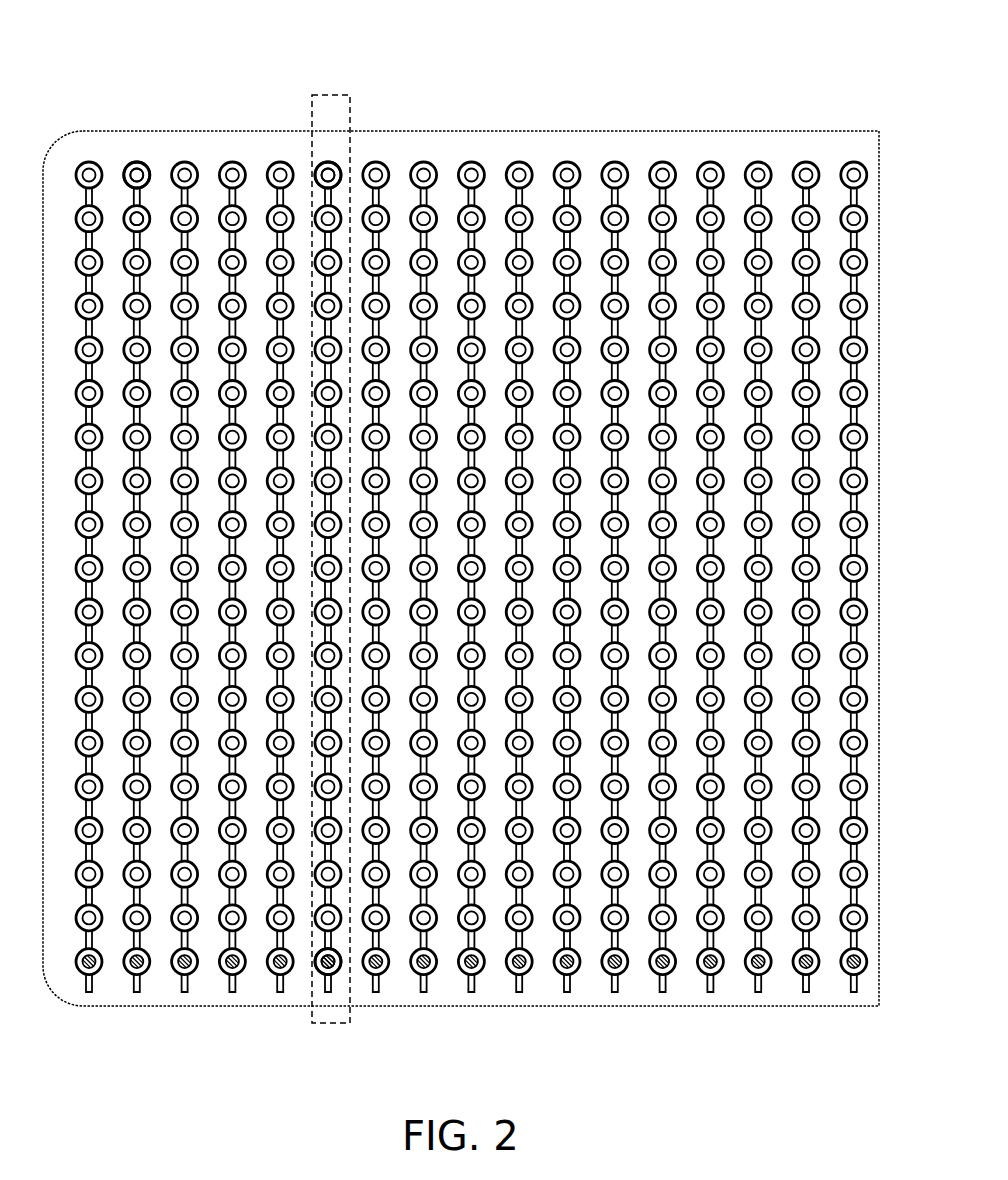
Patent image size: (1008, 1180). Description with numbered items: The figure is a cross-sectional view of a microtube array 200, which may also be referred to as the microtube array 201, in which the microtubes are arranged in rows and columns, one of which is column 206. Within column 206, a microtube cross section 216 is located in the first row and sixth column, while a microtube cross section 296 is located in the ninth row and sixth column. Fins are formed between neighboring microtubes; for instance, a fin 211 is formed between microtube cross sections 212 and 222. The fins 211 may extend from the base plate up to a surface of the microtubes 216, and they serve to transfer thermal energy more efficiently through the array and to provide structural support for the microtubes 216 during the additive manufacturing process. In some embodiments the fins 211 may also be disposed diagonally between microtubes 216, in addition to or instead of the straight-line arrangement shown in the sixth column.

The microtube array 200 is at (163, 62).
The microtube array 201 is at (607, 135).
The column 206 is at (350, 95).
The fin 211 is at (136, 200).
The microtube cross section 212 is at (141, 164).
The microtube cross section 216 is at (333, 163).
The microtube cross section 222 is at (147, 208).
The microtube cross section 296 is at (335, 968).